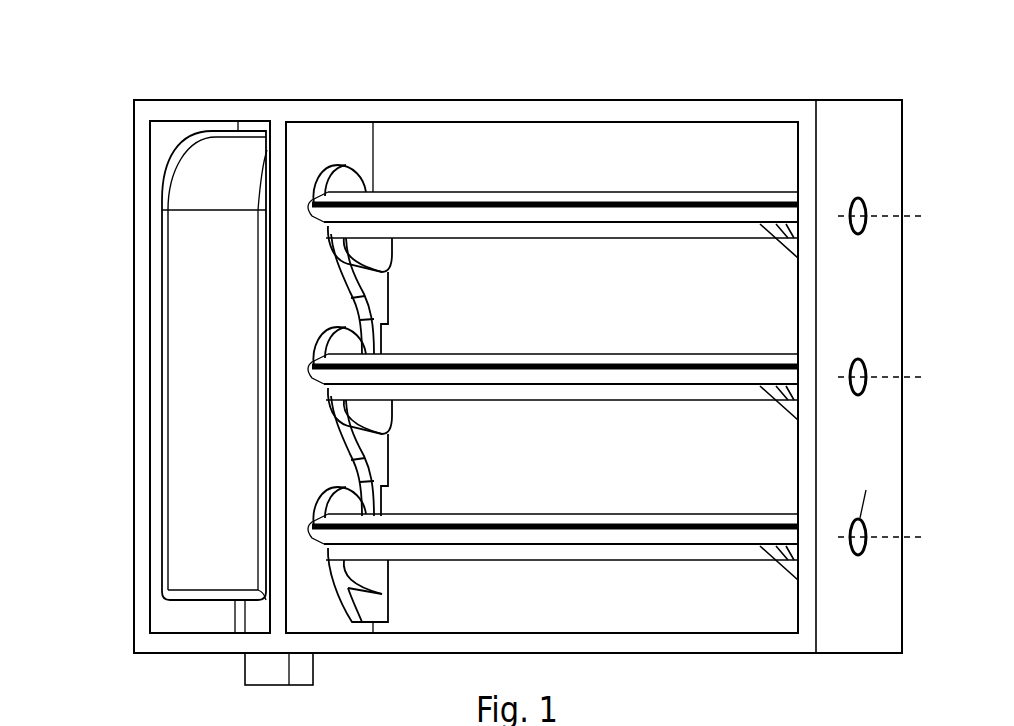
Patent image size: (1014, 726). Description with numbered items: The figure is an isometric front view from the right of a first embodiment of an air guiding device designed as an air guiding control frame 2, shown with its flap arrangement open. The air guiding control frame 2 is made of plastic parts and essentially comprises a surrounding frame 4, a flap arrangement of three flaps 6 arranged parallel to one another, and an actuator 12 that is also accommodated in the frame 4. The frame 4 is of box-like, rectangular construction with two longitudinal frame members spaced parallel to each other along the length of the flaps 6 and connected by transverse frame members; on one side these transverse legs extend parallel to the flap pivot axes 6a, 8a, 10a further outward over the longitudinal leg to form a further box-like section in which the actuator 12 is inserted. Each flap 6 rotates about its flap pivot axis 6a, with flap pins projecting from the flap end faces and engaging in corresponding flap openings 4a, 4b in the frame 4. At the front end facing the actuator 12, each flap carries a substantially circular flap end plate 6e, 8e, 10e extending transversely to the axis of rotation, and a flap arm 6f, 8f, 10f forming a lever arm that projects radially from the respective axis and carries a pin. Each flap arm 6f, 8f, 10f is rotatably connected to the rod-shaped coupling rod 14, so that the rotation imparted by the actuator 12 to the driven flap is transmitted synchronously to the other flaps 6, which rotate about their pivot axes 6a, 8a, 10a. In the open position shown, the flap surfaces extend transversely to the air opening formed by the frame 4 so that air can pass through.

The air guiding control frame 2 is at (112, 70).
The frame 4 is at (144, 340).
The flap opening 4a is at (862, 198).
The flap opening 4b is at (860, 358).
The flap 6 is at (600, 188).
The flap pivot axis 6a is at (897, 213).
The flap end plate 6e is at (353, 183).
The flap arm 6f is at (378, 250).
The flap pivot axis 8a is at (897, 376).
The flap end plate 8e is at (350, 345).
The flap arm 8f is at (373, 410).
The flap pivot axis 10a is at (900, 536).
The flap end plate 10e is at (347, 507).
The flap arm 10f is at (373, 582).
The actuator 12 is at (157, 530).
The coupling rod 14 is at (377, 455).